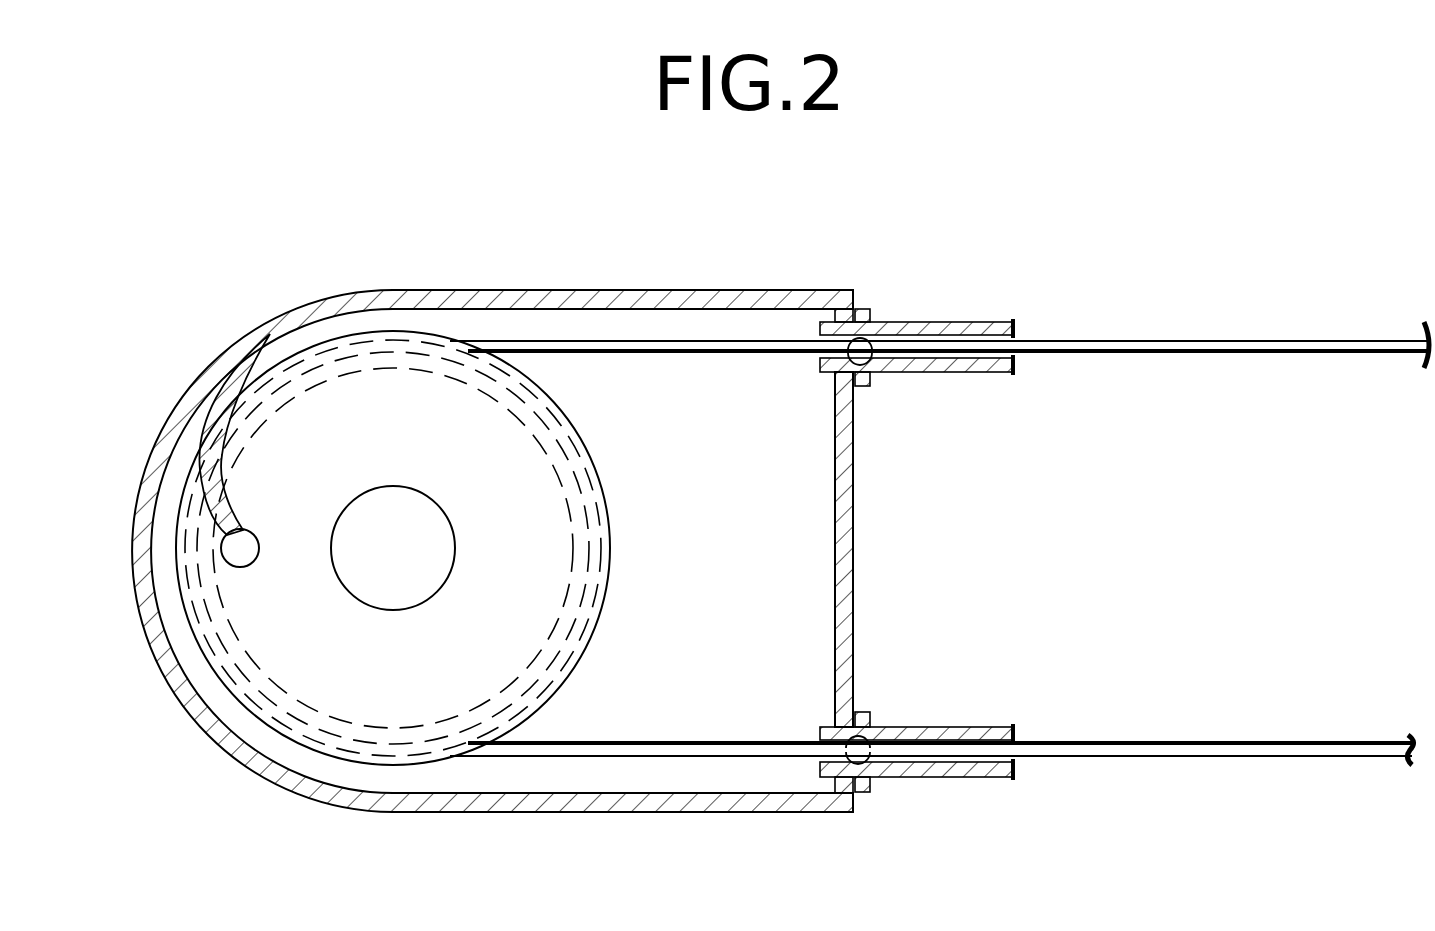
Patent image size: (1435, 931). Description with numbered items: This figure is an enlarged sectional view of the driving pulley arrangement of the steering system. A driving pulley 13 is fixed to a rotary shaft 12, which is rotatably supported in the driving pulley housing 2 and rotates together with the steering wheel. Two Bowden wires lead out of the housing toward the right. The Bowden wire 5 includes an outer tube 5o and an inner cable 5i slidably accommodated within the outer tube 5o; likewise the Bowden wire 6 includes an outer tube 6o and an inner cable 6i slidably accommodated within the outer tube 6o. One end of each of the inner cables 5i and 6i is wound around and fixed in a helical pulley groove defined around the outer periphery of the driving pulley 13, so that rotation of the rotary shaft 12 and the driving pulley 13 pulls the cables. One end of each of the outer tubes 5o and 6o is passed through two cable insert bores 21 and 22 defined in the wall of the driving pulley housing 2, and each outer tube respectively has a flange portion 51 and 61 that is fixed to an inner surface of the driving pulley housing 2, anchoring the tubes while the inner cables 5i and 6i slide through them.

The driving pulley housing 2 is at (573, 291).
The driving pulley 13 is at (620, 463).
The rotary shaft 12 is at (432, 543).
The Bowden wire 6 is at (939, 265).
The outer tube 6o is at (945, 328).
The inner cable 6i is at (945, 228).
The flange portion 61 is at (857, 309).
The cable insert bore 22 is at (873, 365).
The Bowden wire 5 is at (932, 672).
The outer tube 5o is at (945, 727).
The inner cable 5i is at (953, 636).
The flange portion 51 is at (862, 792).
The cable insert bore 21 is at (877, 708).